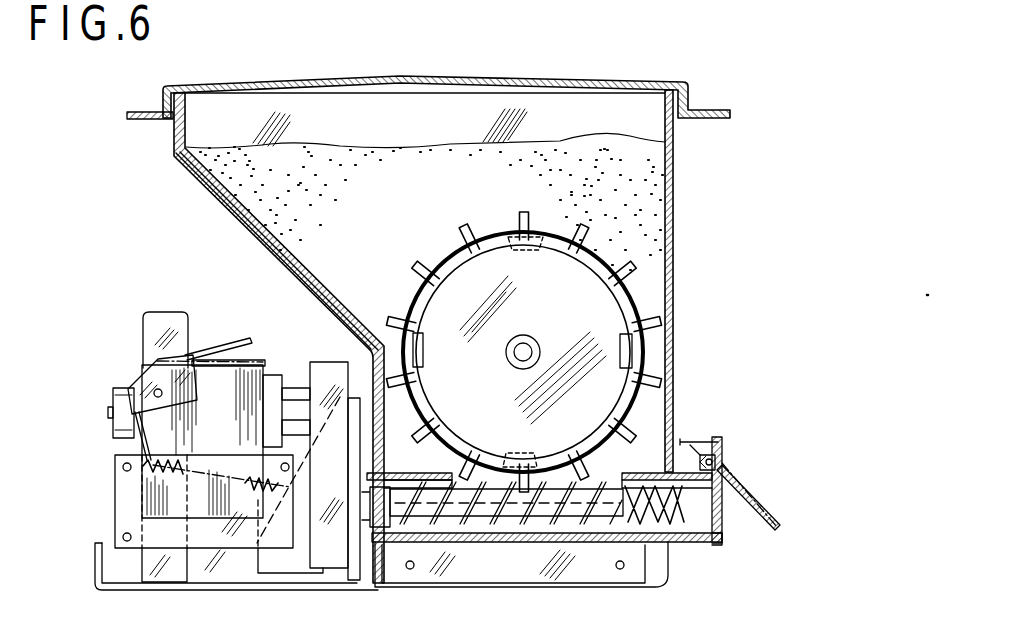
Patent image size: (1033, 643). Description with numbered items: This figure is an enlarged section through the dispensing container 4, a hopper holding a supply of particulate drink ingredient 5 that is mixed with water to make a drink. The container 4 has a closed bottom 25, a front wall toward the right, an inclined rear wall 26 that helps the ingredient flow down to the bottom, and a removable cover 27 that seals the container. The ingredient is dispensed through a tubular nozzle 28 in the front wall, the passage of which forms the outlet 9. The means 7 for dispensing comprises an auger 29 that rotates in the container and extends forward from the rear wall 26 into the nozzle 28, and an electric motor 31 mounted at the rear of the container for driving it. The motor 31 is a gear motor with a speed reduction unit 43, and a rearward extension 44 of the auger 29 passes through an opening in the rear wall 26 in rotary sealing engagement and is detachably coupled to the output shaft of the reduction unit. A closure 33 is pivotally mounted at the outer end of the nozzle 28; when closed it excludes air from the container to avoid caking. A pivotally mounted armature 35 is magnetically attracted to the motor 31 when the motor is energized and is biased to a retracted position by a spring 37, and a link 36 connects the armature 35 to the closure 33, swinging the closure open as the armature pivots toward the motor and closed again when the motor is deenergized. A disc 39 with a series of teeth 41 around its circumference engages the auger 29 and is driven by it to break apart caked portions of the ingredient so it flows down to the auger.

The container 4 is at (684, 246).
The particulate drink ingredient 5 is at (642, 196).
The means for dispensing 7 is at (400, 391).
The outlet 9 is at (726, 532).
The closed bottom 25 is at (468, 544).
The inclined rear wall 26 is at (212, 190).
The removable cover 27 is at (567, 78).
The tubular nozzle 28 is at (693, 540).
The auger 29 is at (592, 544).
The electric motor 31 is at (270, 366).
The closure 33 is at (724, 452).
The armature 35 is at (228, 342).
The link 36 is at (134, 440).
The spring 37 is at (180, 478).
The disc 39 is at (524, 352).
The teeth 41 is at (646, 255).
The speed reduction unit 43 is at (344, 362).
The rearward extension 44 is at (363, 540).